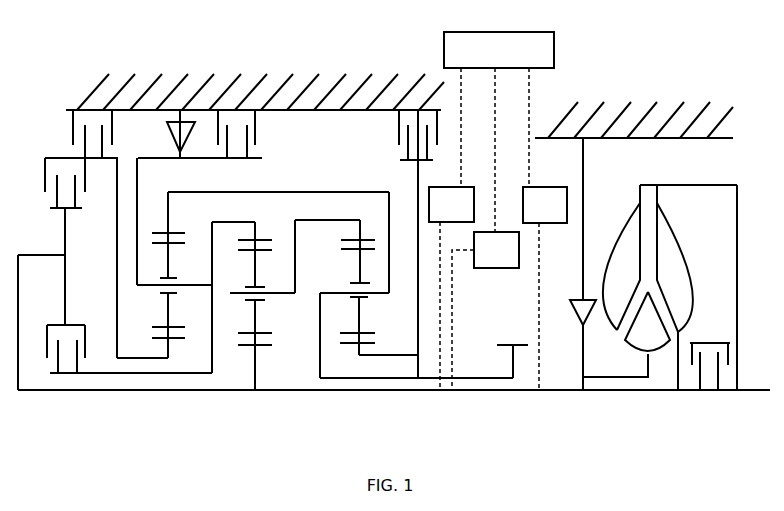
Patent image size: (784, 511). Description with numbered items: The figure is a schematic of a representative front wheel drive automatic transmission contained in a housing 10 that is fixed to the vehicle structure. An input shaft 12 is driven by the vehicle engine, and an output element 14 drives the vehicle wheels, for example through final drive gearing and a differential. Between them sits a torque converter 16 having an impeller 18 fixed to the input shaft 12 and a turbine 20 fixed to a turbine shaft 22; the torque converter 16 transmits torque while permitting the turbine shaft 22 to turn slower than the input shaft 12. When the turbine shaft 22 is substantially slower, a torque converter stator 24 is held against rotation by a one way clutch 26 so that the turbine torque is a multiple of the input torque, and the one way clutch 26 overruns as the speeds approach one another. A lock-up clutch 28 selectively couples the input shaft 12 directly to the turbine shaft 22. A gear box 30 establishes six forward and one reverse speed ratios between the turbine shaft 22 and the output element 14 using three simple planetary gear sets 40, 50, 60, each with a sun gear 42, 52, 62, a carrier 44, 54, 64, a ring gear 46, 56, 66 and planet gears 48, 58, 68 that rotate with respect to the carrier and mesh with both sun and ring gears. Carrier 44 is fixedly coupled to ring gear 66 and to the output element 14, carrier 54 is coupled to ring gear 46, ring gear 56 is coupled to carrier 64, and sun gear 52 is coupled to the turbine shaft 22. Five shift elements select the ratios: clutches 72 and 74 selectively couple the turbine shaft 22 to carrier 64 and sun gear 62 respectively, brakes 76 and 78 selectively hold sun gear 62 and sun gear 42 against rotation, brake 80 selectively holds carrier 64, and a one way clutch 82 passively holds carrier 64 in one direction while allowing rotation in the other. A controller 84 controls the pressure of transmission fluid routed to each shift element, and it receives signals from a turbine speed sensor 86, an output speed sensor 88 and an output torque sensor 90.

The housing 10 is at (335, 85).
The input shaft 12 is at (755, 390).
The output element 14 is at (512, 365).
The torque converter 16 is at (603, 215).
The impeller 18 is at (621, 257).
The turbine 20 is at (675, 287).
The turbine shaft 22 is at (528, 390).
The torque converter stator 24 is at (626, 334).
The one way clutch 26 is at (573, 313).
The lock-up clutch 28 is at (700, 342).
The gear box 30 is at (272, 42).
The planetary gear set 40 is at (345, 360).
The sun gear 42 is at (362, 355).
The carrier 44 is at (378, 293).
The ring gear 46 is at (359, 230).
The planet gears 48 is at (359, 313).
The planetary gear set 50 is at (278, 310).
The sun gear 52 is at (258, 374).
The carrier 54 is at (275, 294).
The ring gear 56 is at (255, 232).
The planet gears 58 is at (255, 312).
The planetary gear set 60 is at (94, 341).
The sun gear 62 is at (168, 352).
The carrier 64 is at (213, 297).
The ring gear 66 is at (168, 208).
The planet gears 68 is at (168, 305).
The clutch 72 is at (88, 344).
The clutch 74 is at (88, 168).
The brake 76 is at (73, 132).
The brake 78 is at (398, 127).
The brake 80 is at (255, 128).
The one way clutch 82 is at (170, 143).
The controller 84 is at (554, 50).
The turbine speed sensor 86 is at (547, 223).
The output speed sensor 88 is at (497, 268).
The output torque sensor 90 is at (468, 186).